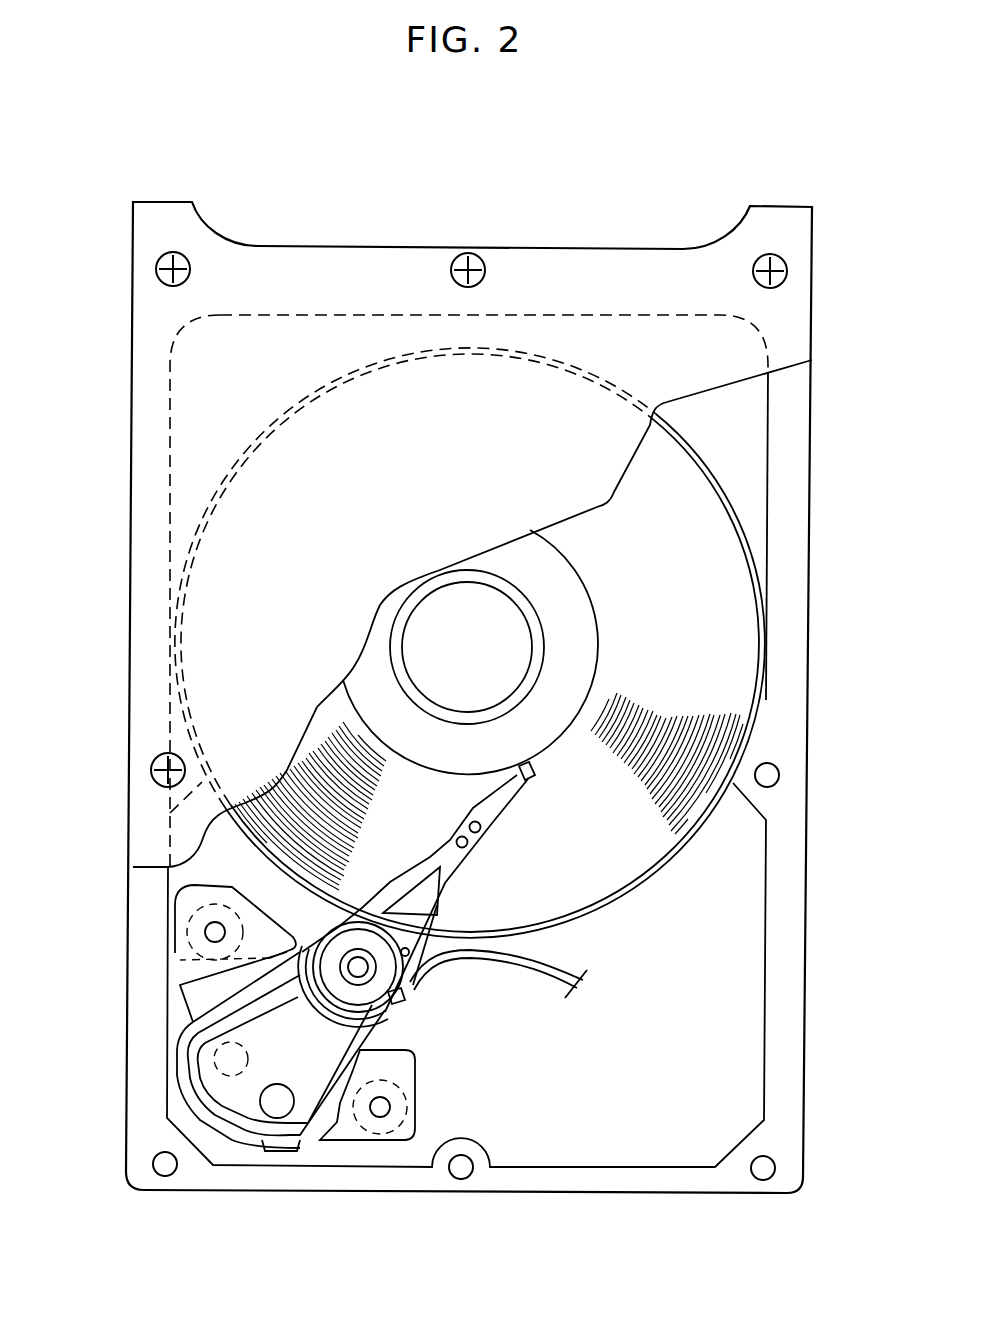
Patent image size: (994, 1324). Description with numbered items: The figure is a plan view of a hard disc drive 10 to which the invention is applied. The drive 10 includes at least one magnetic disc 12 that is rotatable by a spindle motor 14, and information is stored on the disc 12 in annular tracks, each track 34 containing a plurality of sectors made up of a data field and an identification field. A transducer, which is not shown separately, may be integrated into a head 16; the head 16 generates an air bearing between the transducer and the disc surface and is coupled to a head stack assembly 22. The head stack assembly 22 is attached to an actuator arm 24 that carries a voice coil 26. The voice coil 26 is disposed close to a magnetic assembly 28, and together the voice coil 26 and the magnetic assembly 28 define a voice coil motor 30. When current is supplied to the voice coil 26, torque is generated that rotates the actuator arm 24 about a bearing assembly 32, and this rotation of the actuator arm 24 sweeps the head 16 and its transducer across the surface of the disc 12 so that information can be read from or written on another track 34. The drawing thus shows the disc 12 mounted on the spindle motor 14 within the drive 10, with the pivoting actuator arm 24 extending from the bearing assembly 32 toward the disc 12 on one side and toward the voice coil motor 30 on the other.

The drive 10 is at (648, 183).
The magnetic disc 12 is at (720, 584).
The spindle motor 14 is at (442, 622).
The head 16 is at (532, 776).
The head stack assembly 22 is at (470, 885).
The actuator arm 24 is at (270, 988).
The voice coil 26 is at (200, 1055).
The magnetic assembly 28 is at (213, 997).
The voice coil motor 30 is at (328, 1123).
The bearing assembly 32 is at (370, 978).
The track 34 is at (326, 768).